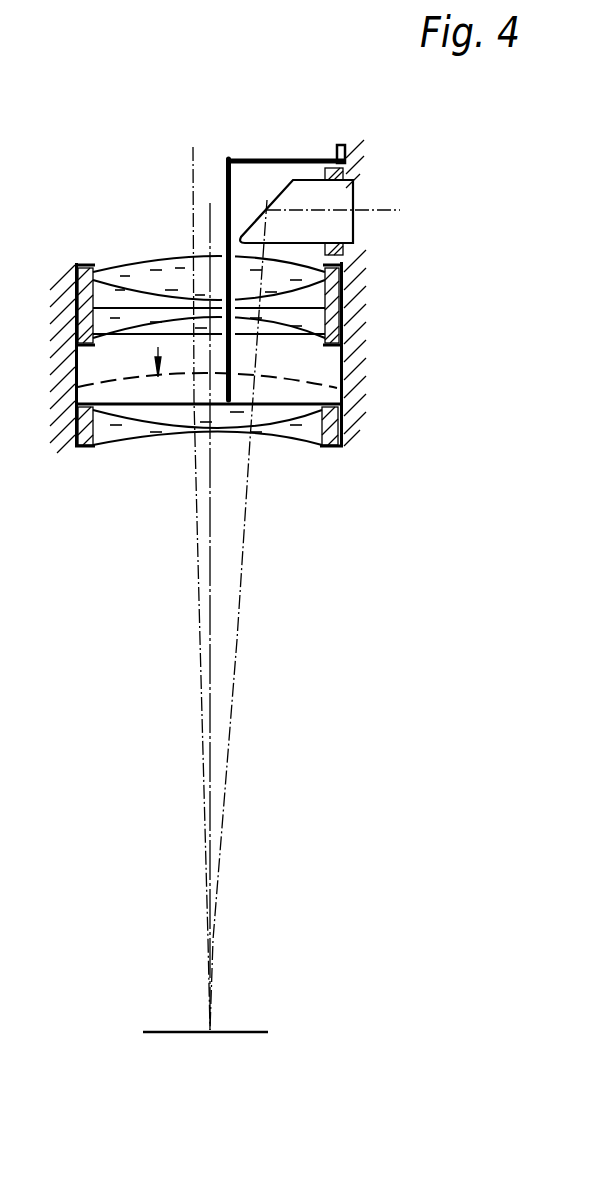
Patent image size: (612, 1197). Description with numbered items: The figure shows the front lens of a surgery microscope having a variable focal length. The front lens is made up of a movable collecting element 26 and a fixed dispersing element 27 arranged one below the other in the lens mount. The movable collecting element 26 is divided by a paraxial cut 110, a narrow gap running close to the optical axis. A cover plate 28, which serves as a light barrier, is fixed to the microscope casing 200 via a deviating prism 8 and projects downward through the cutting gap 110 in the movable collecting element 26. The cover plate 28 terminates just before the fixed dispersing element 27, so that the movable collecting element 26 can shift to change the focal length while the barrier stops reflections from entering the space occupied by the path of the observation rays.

The deviating prism 8 is at (345, 228).
The movable collecting element 26 is at (345, 308).
The fixed dispersing element 27 is at (338, 446).
The cover plate 28 is at (228, 172).
The paraxial cut 110 is at (225, 282).
The microscope casing 200 is at (350, 152).